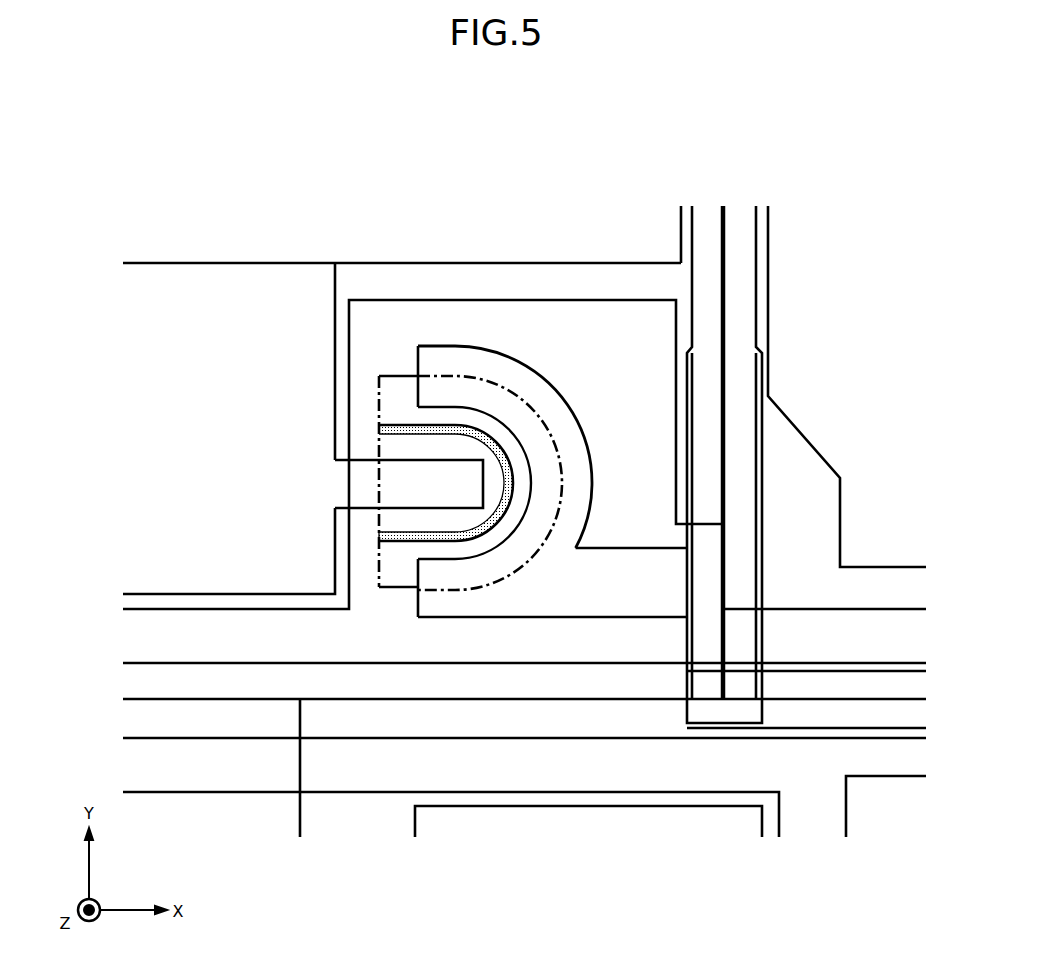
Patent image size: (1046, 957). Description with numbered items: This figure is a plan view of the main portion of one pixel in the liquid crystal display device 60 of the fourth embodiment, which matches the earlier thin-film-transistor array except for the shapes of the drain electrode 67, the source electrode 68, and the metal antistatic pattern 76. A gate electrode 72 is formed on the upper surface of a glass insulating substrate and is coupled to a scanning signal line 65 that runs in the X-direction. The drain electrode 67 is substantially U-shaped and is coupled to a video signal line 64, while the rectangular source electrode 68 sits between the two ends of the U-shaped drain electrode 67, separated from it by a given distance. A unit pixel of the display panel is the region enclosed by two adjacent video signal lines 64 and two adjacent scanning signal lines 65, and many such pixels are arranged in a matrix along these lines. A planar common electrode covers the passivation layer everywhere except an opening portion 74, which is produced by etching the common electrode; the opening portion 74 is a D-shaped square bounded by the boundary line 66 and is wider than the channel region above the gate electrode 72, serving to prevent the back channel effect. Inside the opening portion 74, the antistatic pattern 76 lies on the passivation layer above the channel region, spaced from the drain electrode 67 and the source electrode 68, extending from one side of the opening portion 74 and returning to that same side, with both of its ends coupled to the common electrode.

The liquid crystal display device 60 is at (256, 187).
The video signal line 64 is at (757, 196).
The scanning signal line 65 is at (106, 594).
The boundary line 66 is at (535, 408).
The drain electrode 67 is at (573, 460).
The source electrode 68 is at (425, 495).
The gate electrode 72 is at (378, 320).
The opening portion 74 is at (397, 400).
The antistatic pattern 76 is at (493, 523).